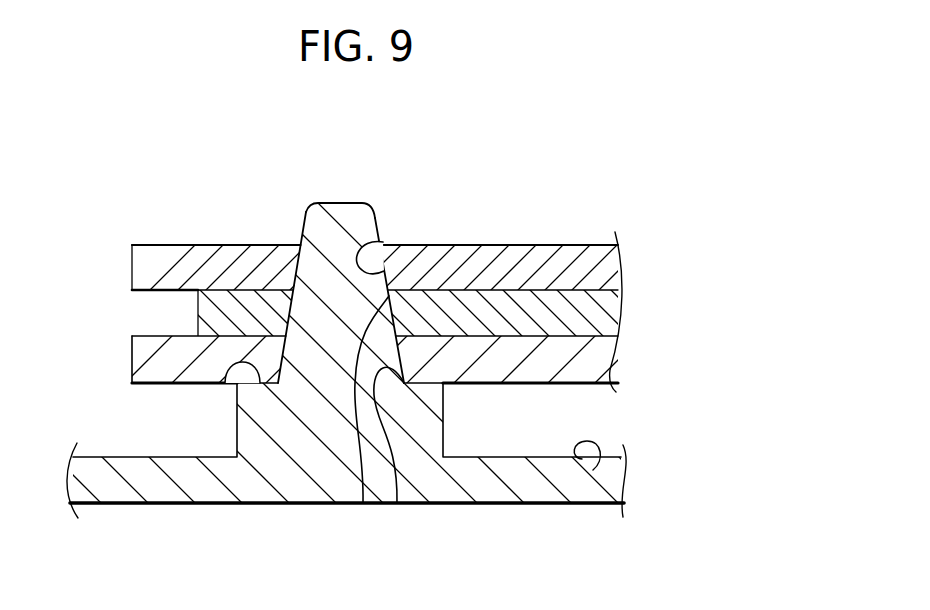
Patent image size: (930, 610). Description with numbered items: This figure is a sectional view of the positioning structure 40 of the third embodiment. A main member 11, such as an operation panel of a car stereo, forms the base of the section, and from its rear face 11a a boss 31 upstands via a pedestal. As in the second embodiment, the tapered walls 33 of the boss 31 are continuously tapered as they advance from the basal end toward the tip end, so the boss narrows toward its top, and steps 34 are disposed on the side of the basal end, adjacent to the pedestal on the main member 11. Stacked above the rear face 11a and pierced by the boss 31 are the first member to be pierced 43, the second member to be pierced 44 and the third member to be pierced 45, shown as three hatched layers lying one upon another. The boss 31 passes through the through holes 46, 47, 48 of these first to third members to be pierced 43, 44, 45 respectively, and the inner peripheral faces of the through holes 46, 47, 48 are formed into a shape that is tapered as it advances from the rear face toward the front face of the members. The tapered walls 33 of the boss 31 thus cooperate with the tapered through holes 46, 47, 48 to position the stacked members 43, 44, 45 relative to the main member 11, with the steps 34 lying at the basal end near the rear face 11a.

The main member 11 is at (163, 488).
The rear face 11a is at (593, 470).
The boss 31 is at (302, 204).
The tapered wall 33 is at (383, 281).
The step 34 is at (225, 384).
The positioning structure 40 is at (363, 194).
The first member to be pierced 43 is at (160, 362).
The second member to be pierced 44 is at (222, 317).
The third member to be pierced 45 is at (162, 268).
The through hole 46 is at (397, 503).
The through hole 47 is at (363, 503).
The through hole 48 is at (383, 242).